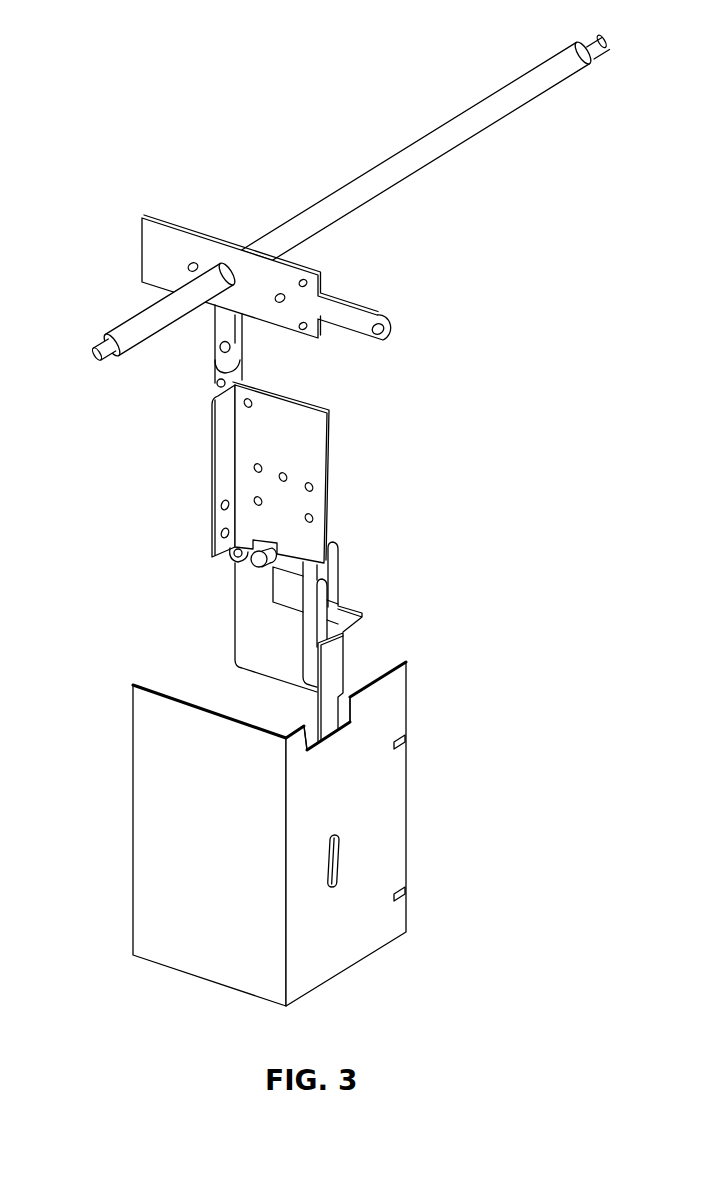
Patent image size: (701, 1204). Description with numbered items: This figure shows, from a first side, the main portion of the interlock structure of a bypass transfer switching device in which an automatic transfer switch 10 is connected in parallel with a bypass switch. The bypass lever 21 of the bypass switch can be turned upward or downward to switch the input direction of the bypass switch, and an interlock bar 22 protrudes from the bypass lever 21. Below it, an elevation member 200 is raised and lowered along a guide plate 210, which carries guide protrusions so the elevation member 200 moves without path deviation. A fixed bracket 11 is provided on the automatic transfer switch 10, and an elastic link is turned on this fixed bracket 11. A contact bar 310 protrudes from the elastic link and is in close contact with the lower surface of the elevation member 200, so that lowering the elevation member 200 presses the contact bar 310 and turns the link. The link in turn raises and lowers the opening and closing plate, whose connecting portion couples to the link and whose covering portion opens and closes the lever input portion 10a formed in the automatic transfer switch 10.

The automatic transfer switch 10 is at (274, 834).
The lever input portion 10a is at (334, 860).
The fixed bracket 11 is at (250, 635).
The bypass lever 21 is at (178, 242).
The interlock bar 22 is at (222, 330).
The elevation member 200 is at (267, 472).
The guide plate 210 is at (223, 474).
The contact bar 310 is at (258, 561).